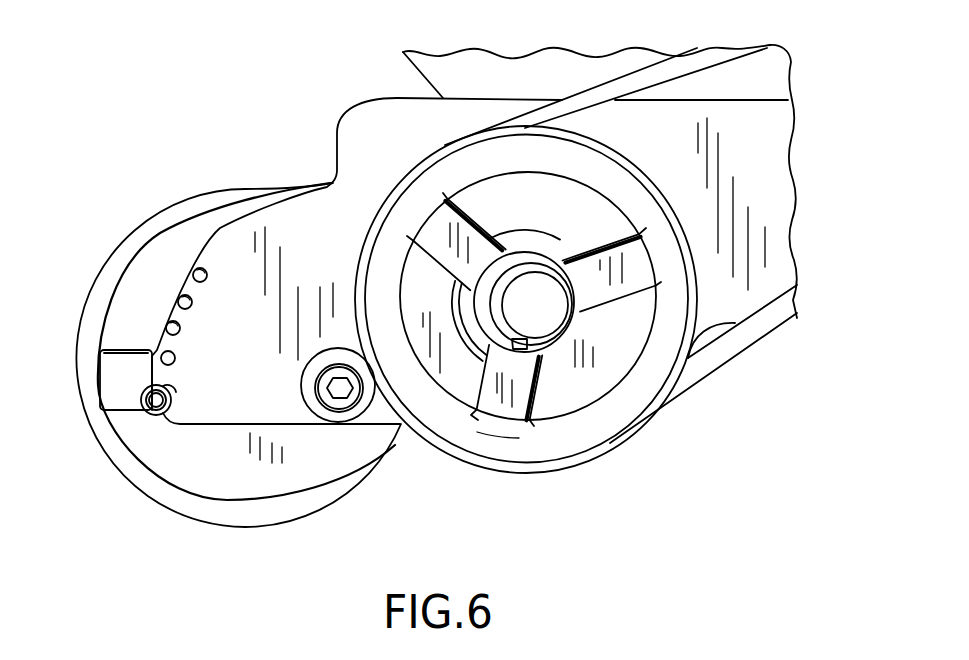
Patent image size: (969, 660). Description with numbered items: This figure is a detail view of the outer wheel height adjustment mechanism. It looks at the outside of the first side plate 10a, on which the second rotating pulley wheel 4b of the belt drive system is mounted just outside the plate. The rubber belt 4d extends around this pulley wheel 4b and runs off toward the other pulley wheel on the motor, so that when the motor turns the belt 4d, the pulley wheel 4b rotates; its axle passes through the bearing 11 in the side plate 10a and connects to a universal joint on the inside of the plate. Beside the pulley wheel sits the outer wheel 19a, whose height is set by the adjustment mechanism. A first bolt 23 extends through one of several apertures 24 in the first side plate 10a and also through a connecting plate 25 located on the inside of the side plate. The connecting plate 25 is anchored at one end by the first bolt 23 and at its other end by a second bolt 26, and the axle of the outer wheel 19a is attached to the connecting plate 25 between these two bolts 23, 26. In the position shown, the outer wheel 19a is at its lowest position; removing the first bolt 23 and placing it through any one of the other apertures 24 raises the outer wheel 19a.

The second rotating pulley wheel 4b is at (570, 447).
The rubber belt 4d is at (668, 70).
The first side plate 10a is at (777, 123).
The bearing 11 is at (537, 247).
The outer wheel 19a is at (267, 517).
The first bolt 23 is at (158, 402).
The apertures 24 is at (162, 356).
The connecting plate 25 is at (98, 383).
The second bolt 26 is at (342, 390).